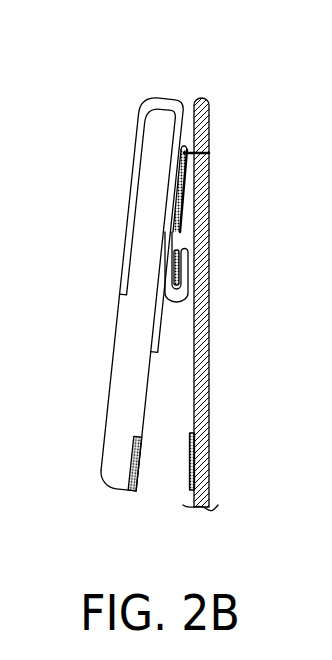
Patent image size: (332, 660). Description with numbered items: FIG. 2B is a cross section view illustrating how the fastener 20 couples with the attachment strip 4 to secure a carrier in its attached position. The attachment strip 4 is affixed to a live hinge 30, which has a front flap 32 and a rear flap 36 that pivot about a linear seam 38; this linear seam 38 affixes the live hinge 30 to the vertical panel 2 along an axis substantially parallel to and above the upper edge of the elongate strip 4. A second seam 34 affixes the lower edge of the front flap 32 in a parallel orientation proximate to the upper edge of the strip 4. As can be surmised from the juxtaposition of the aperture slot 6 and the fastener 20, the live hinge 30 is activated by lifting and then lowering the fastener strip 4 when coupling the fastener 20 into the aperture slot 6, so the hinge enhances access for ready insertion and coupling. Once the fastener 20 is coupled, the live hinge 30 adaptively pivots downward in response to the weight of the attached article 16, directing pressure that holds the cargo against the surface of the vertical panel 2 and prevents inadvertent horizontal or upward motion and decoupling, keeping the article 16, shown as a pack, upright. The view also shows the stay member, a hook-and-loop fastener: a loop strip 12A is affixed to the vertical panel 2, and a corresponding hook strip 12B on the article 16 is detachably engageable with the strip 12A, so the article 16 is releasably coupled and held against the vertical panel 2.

The vertical panel 2 is at (212, 292).
The attachment strip 4 is at (185, 212).
The aperture slot 6 is at (196, 243).
The loop strip 12A is at (192, 464).
The hook strip 12B is at (132, 465).
The attached article 16 is at (106, 350).
The fastener 20 is at (160, 308).
The live hinge 30 is at (188, 122).
The front flap 32 is at (178, 180).
The second seam 34 is at (180, 186).
The rear flap 36 is at (188, 176).
The linear seam 38 is at (210, 153).